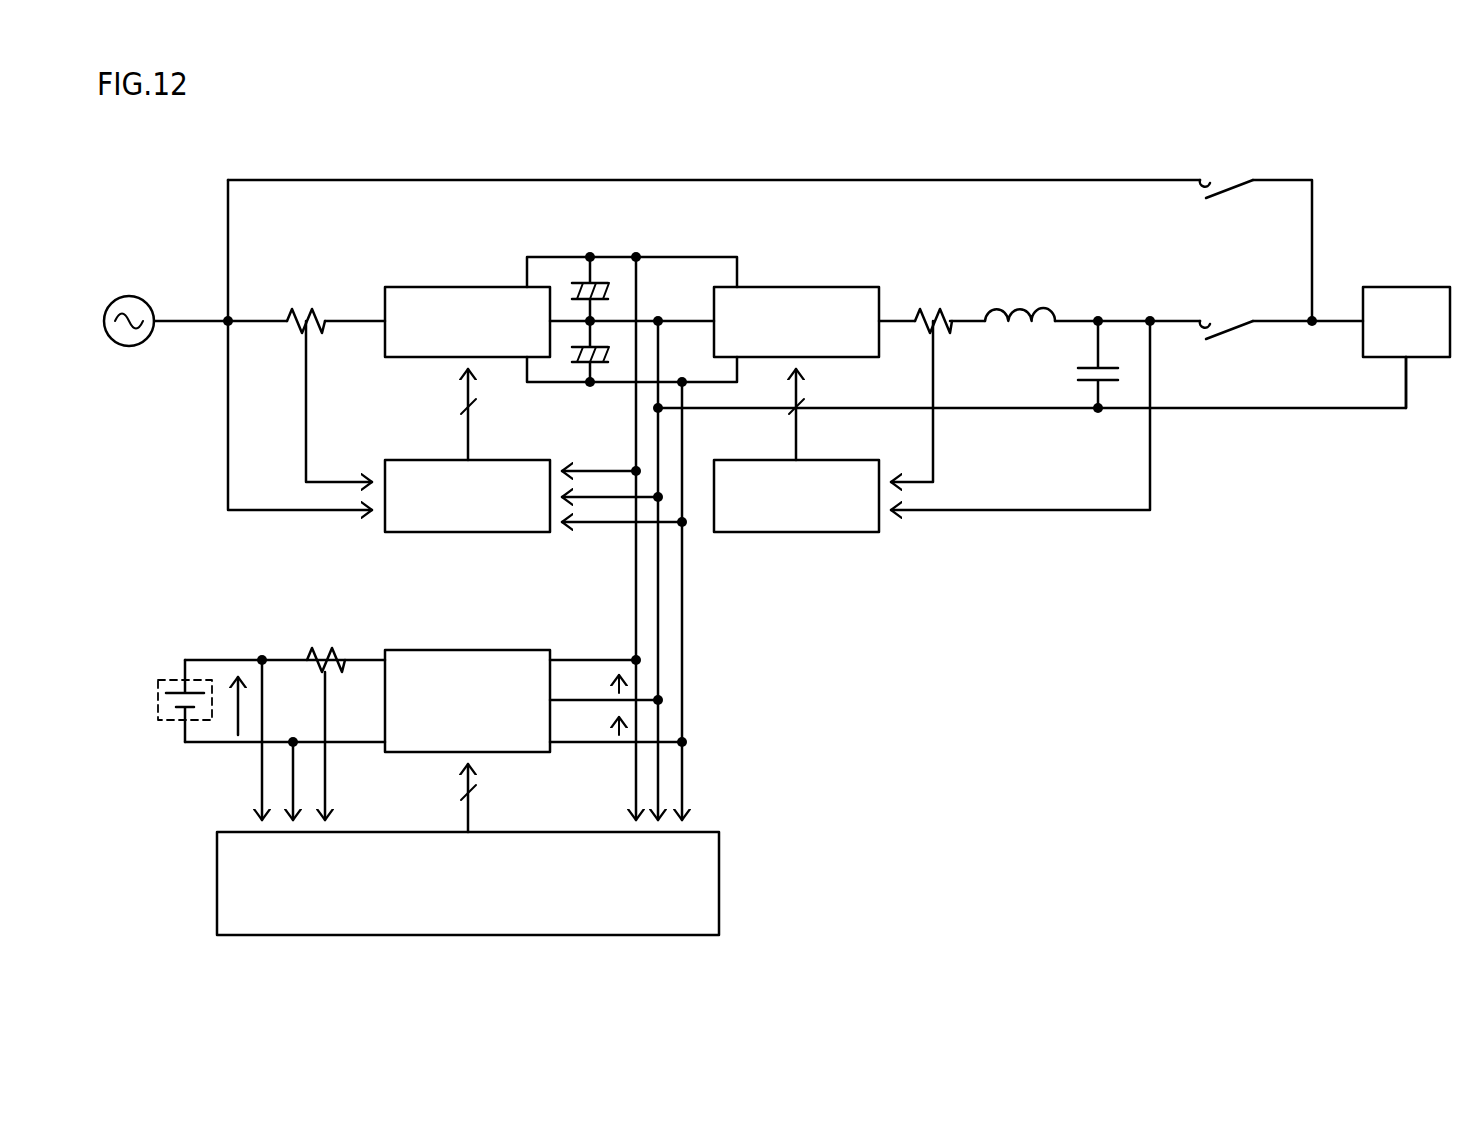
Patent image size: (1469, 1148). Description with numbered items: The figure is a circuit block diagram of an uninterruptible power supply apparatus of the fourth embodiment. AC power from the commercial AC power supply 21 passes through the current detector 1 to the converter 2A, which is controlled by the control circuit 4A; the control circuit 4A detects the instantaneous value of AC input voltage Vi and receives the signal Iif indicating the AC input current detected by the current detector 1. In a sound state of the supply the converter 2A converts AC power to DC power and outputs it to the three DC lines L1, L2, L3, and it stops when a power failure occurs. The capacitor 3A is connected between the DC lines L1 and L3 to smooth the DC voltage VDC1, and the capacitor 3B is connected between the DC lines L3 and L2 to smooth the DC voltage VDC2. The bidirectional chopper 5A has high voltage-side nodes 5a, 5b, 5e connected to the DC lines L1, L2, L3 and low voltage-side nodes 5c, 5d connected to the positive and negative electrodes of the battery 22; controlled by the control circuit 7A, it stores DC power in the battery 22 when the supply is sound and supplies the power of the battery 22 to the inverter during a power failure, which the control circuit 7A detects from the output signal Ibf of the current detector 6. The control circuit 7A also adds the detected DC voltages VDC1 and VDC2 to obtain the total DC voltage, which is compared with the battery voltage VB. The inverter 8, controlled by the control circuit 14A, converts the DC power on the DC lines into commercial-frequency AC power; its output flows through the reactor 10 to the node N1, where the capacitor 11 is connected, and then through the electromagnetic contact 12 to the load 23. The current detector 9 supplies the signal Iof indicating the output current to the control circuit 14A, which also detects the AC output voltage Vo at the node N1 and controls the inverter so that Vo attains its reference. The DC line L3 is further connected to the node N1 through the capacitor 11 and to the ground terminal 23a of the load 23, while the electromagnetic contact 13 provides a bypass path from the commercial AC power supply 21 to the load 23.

The commercial AC power supply 21 is at (126, 296).
The current detector 1 is at (310, 309).
The converter 2A is at (465, 287).
The control circuit 4A is at (505, 460).
The DC line L1 is at (548, 257).
The DC line L2 is at (557, 383).
The DC line L3 is at (688, 321).
The capacitor 3A is at (604, 283).
The capacitor 3B is at (606, 383).
The inverter 8 is at (818, 287).
The current detector 9 is at (936, 309).
The reactor 10 is at (1020, 304).
The capacitor 11 is at (1092, 368).
The electromagnetic contact 12 is at (1225, 331).
The electromagnetic contact 13 is at (1225, 190).
The control circuit 14A is at (820, 460).
The load 23 is at (1408, 287).
The ground terminal 23a is at (1410, 362).
The battery 22 is at (164, 680).
The current detector 6 is at (310, 648).
The bidirectional chopper 5A is at (465, 650).
The high voltage-side node 5a is at (553, 660).
The high voltage-side node 5b is at (553, 742).
The low voltage-side node 5c is at (385, 656).
The low voltage-side node 5d is at (385, 742).
The high voltage-side node 5e is at (553, 700).
The control circuit 7A is at (518, 832).
The AC input voltage Vi is at (225, 327).
The AC output voltage Vo is at (1148, 310).
The node N1 is at (1098, 310).
The signal Iif is at (306, 378).
The signal Iof is at (934, 448).
The output signal Ibf is at (325, 708).
The battery voltage VB is at (235, 712).
The DC voltage VDC1 is at (619, 690).
The DC voltage VDC2 is at (619, 730).